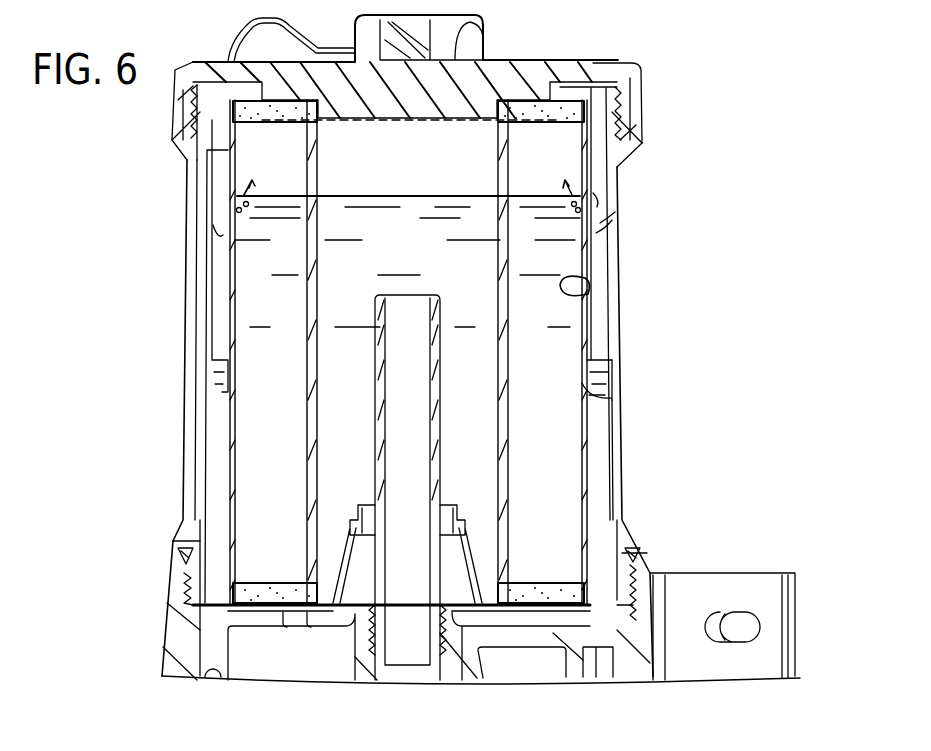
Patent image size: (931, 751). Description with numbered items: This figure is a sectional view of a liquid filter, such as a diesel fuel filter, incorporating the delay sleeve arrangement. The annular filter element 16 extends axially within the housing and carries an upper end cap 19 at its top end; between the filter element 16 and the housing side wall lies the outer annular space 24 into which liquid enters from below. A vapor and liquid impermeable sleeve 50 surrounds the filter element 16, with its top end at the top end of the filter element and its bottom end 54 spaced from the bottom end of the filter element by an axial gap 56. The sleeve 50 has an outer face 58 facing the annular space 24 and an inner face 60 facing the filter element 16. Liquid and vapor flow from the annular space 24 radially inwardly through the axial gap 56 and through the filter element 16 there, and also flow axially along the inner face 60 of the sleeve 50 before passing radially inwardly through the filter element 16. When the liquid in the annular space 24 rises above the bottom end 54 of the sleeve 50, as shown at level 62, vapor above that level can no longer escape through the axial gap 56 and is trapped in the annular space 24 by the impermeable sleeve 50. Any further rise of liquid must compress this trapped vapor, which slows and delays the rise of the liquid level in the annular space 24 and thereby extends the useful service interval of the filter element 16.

The filter element 16 is at (250, 477).
The upper end cap 19 is at (595, 82).
The annular space 24 is at (600, 237).
The sleeve 50 is at (230, 270).
The bottom end 54 is at (580, 387).
The axial gap 56 is at (600, 457).
The outer face 58 is at (588, 258).
The inner face 60 is at (590, 294).
The level 62 is at (597, 352).